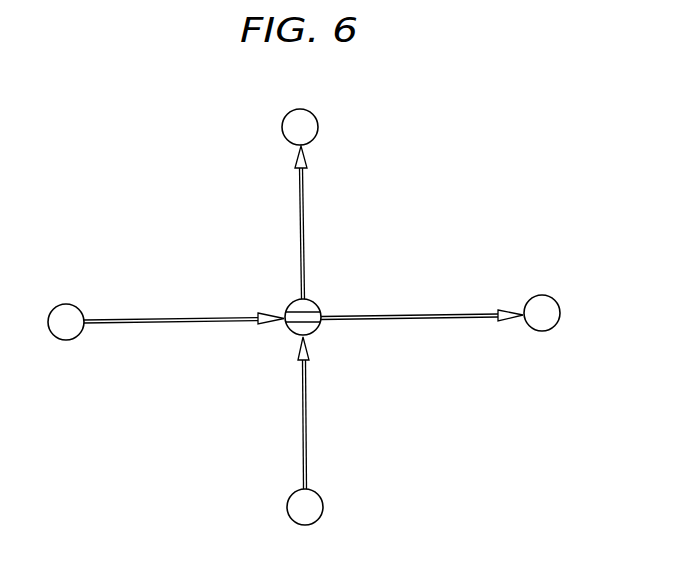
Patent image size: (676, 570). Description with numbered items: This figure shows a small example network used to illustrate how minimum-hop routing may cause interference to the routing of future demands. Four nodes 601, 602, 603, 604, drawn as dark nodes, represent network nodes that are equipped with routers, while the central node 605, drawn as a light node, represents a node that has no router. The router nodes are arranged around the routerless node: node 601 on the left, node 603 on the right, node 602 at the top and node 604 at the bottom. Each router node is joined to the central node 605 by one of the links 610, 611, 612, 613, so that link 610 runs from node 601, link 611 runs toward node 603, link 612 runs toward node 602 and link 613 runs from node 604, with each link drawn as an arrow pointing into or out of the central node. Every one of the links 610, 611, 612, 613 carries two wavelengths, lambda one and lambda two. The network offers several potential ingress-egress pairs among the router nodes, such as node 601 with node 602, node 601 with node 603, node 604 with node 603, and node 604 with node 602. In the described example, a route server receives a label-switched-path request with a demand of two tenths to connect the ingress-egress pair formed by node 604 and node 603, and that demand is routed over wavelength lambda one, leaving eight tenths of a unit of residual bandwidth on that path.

The node with router 601 is at (64, 340).
The node with router 602 is at (284, 123).
The node with router 603 is at (538, 331).
The node with router 604 is at (287, 510).
The node without router 605 is at (318, 336).
The link 610 is at (170, 318).
The link 611 is at (412, 313).
The link 612 is at (302, 224).
The link 613 is at (306, 433).